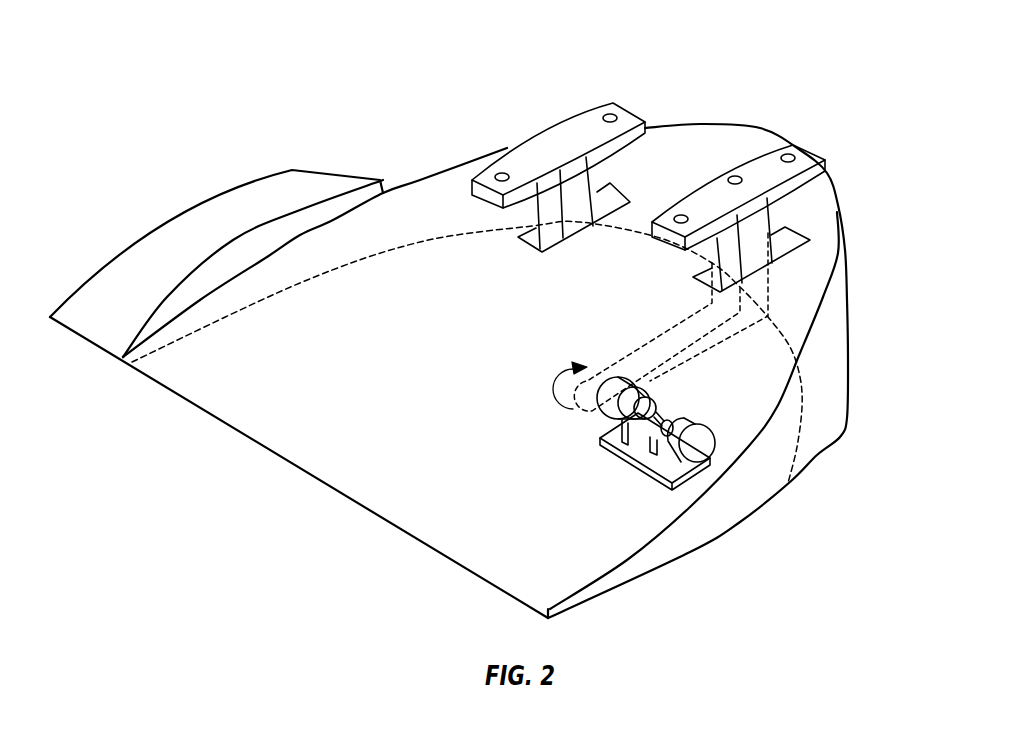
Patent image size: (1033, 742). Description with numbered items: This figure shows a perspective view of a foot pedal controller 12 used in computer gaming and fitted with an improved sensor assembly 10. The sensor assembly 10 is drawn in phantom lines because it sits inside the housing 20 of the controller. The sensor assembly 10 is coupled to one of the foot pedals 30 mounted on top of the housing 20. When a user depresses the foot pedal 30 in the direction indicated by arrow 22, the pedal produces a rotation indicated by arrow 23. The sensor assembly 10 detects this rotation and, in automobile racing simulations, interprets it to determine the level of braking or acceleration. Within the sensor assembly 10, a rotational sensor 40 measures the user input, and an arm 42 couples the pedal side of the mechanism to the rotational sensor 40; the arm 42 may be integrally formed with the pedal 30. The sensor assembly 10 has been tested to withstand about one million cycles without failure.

The sensor assembly 10 is at (731, 446).
The foot pedal controller 12 is at (722, 55).
The housing 20 is at (335, 462).
The arrow 22 is at (834, 185).
The arrow 23 is at (556, 380).
The foot pedal 30 is at (757, 170).
The rotational sensor 40 is at (700, 446).
The arm 42 is at (655, 347).